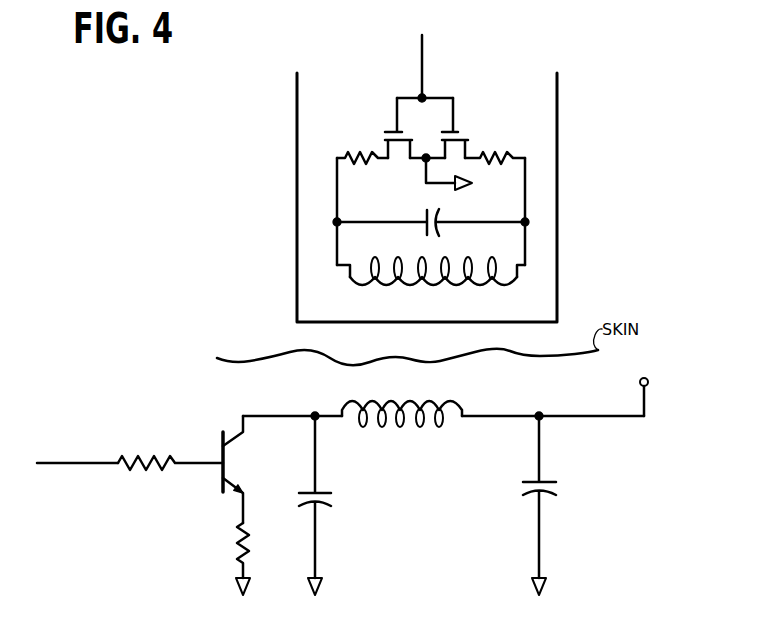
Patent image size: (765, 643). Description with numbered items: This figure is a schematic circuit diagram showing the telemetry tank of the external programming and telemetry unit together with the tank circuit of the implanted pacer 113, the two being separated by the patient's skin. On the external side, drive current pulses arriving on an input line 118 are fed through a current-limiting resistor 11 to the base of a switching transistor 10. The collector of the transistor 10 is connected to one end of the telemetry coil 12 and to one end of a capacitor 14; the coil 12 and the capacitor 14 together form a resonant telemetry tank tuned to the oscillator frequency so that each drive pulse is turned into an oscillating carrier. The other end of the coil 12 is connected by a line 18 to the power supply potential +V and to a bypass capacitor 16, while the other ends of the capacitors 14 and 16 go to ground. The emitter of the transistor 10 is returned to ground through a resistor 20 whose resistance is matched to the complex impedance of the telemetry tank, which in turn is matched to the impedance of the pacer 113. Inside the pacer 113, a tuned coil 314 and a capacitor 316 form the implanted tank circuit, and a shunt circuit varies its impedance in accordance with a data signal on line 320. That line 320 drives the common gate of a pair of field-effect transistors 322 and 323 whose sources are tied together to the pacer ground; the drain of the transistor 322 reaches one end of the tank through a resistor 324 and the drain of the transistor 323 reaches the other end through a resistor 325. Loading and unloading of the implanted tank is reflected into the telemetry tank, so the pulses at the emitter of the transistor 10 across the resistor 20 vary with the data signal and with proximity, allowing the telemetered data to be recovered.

The pacer 113 is at (297, 163).
The line 320 is at (422, 69).
The field-effect transistor 322 is at (390, 130).
The field-effect transistor 323 is at (462, 130).
The resistor 324 is at (357, 152).
The resistor 325 is at (490, 153).
The capacitor 316 is at (425, 213).
The tuned coil 314 is at (453, 285).
The input lead 118 is at (80, 463).
The current-limiting resistor 11 is at (123, 467).
The switching transistor 10 is at (217, 480).
The resistor 20 is at (235, 540).
The telemetry coil 12 is at (400, 424).
The capacitor 14 is at (323, 488).
The bypass capacitor 16 is at (548, 477).
The line 18 is at (645, 400).